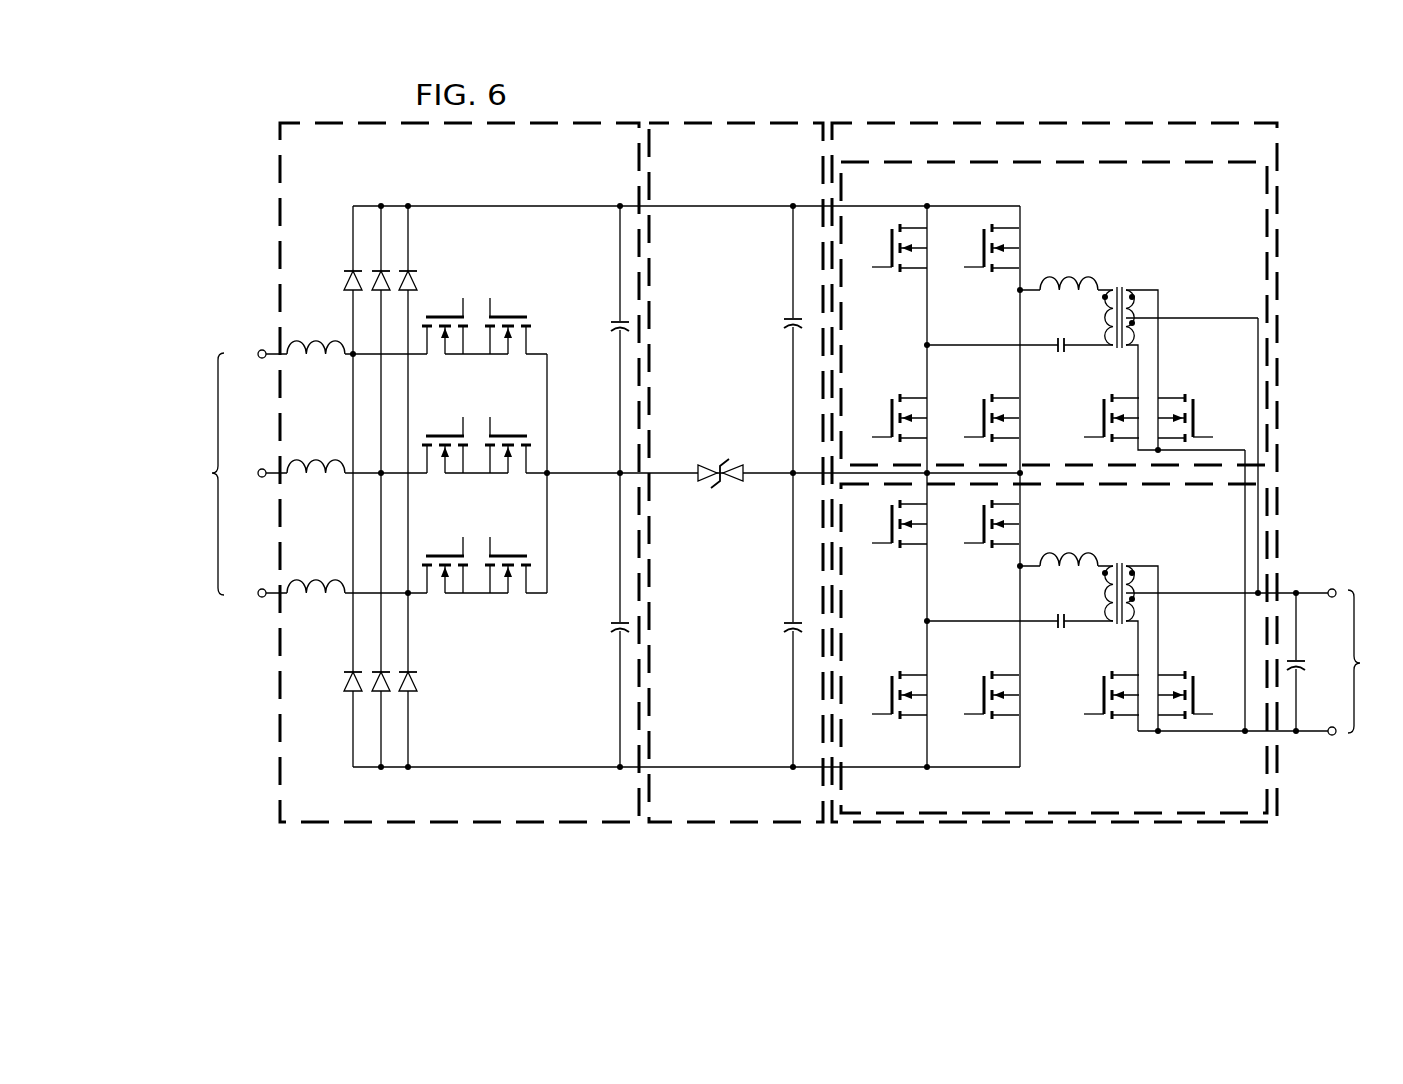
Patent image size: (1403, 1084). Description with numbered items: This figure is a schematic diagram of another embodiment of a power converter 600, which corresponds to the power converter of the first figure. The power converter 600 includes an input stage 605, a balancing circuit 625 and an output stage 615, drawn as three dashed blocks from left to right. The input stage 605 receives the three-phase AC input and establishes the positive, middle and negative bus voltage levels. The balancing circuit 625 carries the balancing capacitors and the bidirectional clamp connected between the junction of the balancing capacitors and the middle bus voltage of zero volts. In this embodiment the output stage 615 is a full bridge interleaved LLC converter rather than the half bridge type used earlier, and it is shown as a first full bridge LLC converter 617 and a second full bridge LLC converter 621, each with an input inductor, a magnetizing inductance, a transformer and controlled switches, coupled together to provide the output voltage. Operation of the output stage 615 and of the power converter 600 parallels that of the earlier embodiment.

The power converter 600 is at (1306, 242).
The input stage 605 is at (324, 121).
The balancing circuit 625 is at (657, 121).
The output stage 615 is at (1188, 121).
The full bridge LLC converter 617 is at (1162, 238).
The full bridge LLC converter 621 is at (1150, 802).